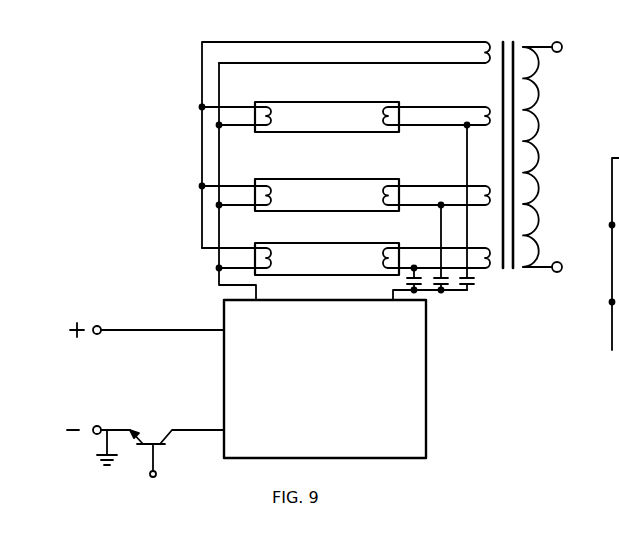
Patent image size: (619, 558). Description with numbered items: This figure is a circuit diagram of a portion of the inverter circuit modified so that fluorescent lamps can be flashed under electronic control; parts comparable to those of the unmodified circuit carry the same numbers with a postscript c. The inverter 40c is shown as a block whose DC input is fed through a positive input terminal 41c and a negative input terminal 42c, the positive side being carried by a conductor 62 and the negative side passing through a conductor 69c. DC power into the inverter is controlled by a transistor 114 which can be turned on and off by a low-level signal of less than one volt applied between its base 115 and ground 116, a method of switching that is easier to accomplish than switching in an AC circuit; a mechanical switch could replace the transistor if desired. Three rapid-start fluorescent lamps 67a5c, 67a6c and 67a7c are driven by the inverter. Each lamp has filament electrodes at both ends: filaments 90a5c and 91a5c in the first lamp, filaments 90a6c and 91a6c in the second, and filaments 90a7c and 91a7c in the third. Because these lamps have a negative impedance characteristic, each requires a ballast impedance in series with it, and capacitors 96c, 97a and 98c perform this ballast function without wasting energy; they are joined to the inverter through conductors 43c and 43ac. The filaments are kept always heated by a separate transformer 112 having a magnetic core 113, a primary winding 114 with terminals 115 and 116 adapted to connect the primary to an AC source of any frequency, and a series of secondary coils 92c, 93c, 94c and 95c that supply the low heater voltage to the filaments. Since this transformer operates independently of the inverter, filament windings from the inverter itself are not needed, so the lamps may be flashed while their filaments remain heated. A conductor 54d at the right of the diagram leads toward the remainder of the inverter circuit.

The separate transformer 112 is at (516, 28).
The magnetic core 113 is at (502, 45).
The primary winding 114 is at (542, 108).
The terminal 115 is at (562, 47).
The terminal 116 is at (562, 264).
The secondary coil 95c is at (484, 50).
The secondary coil 94c is at (489, 112).
The secondary coil 93c is at (486, 192).
The secondary coil 92c is at (488, 268).
The filament 90a7c is at (287, 88).
The filament 91a7c is at (386, 112).
The fluorescent lamp 67a7c is at (352, 130).
The filament 90a6c is at (287, 166).
The filament 91a6c is at (386, 190).
The fluorescent lamp 67a6c is at (352, 208).
The filament 90a5c is at (287, 232).
The filament 91a5c is at (386, 256).
The fluorescent lamp 67a5c is at (352, 272).
The capacitor 96c is at (416, 288).
The capacitor 97a is at (444, 288).
The capacitor 98c is at (471, 288).
The conductor 43c is at (268, 300).
The conductor 43ac is at (386, 300).
The inverter 40c is at (343, 390).
The positive input terminal 41c is at (102, 326).
The negative input terminal 42c is at (97, 426).
The conductor 62 is at (203, 330).
The conductor 69c is at (212, 430).
The conductor 54d is at (611, 302).